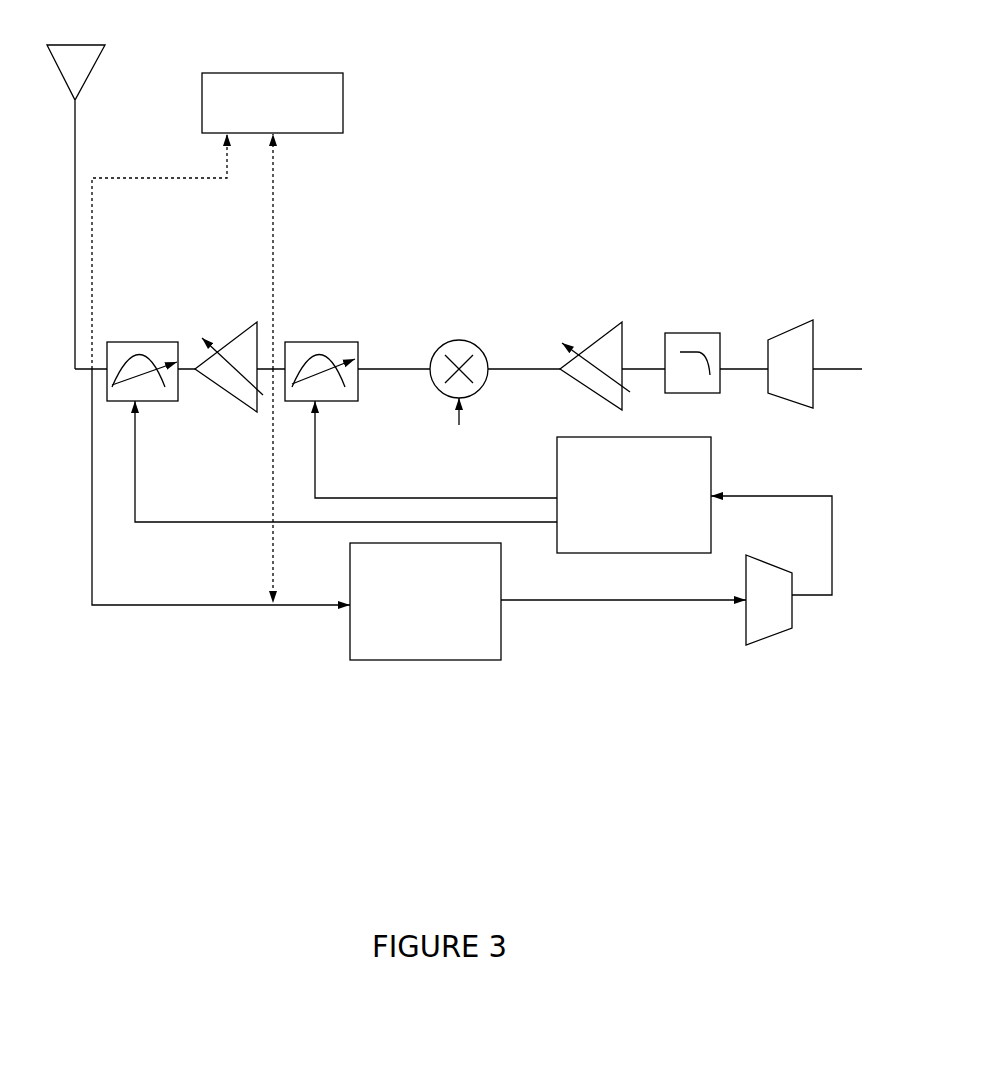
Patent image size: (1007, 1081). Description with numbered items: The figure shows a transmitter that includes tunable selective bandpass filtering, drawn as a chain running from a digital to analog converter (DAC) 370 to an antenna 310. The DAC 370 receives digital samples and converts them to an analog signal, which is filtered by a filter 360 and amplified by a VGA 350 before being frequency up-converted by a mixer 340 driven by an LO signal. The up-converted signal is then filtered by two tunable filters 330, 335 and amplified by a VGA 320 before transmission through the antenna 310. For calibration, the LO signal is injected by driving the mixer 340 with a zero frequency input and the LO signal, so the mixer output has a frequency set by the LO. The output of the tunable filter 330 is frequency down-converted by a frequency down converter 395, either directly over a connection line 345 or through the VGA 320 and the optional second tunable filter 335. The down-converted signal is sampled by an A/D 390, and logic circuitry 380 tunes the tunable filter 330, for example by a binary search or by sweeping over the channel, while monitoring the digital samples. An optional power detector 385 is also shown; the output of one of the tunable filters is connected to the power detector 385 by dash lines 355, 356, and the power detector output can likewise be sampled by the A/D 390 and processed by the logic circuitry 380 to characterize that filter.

The antenna 310 is at (80, 127).
The VGA 320 is at (238, 338).
The tunable filter 330 is at (312, 340).
The tunable filter 335 is at (158, 348).
The mixer 340 is at (455, 340).
The connection line 345 is at (270, 463).
The VGA 350 is at (578, 343).
The dash line 355 is at (273, 208).
The dash line 356 is at (158, 181).
The filter 360 is at (693, 338).
The digital to analog converter (DAC) 370 is at (797, 340).
The logic circuitry 380 is at (695, 463).
The power detector 385 is at (328, 122).
The A/D 390 is at (763, 622).
The frequency down converter 395 is at (485, 642).